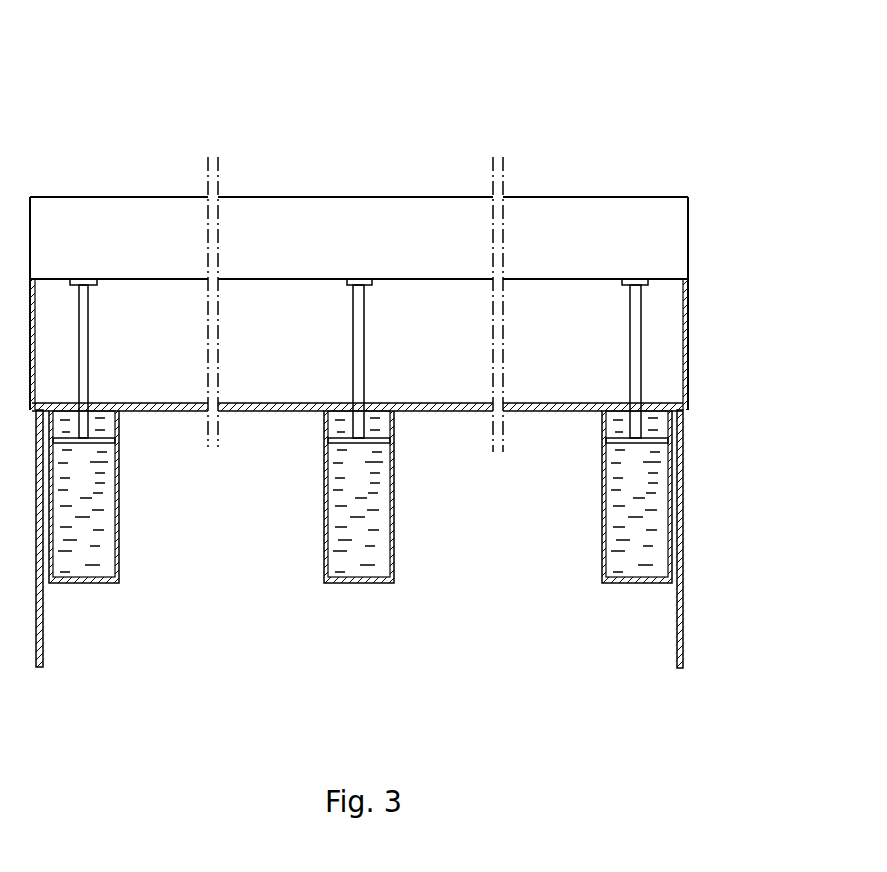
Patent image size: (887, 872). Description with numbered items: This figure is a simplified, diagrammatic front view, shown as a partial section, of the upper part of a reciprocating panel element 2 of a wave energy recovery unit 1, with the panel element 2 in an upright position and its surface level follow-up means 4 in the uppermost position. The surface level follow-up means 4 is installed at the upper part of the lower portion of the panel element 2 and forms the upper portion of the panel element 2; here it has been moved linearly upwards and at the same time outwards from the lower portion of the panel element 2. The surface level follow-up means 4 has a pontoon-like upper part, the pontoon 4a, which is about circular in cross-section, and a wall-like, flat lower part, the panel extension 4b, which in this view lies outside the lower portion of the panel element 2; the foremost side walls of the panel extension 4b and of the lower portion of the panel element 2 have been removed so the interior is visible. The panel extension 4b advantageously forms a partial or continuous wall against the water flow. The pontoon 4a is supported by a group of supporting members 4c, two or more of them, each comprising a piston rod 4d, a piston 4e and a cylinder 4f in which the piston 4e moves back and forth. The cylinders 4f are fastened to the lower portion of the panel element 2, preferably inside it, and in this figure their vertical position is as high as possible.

The wave energy recovery unit 1 is at (124, 90).
The panel element 2 is at (683, 618).
The surface level follow-up means 4 is at (730, 277).
The pontoon 4a is at (347, 202).
The panel extension 4b is at (675, 377).
The supporting member 4c is at (377, 357).
The piston rod 4d is at (83, 352).
The piston 4e is at (113, 441).
The cylinder 4f is at (119, 555).